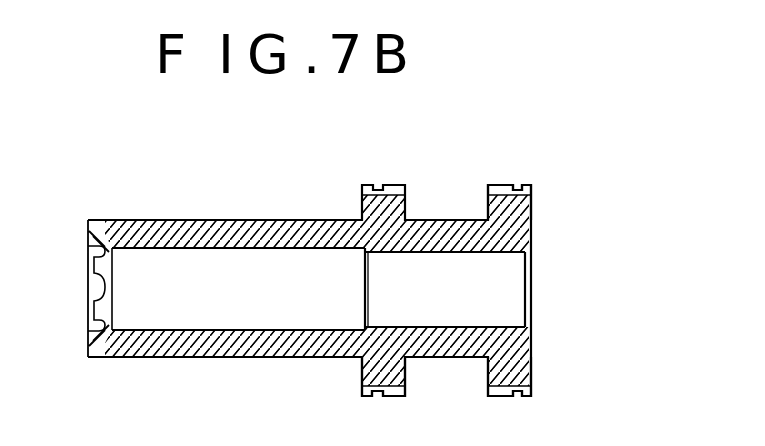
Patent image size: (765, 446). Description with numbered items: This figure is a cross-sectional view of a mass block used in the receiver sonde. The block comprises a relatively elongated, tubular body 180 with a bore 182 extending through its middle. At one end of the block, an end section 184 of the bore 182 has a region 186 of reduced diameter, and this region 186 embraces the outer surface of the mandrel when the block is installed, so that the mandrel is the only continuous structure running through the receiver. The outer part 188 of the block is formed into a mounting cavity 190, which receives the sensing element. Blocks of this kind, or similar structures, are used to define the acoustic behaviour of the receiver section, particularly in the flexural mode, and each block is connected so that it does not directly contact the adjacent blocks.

The tubular body 180 is at (292, 228).
The bore 182 is at (192, 250).
The end section 184 is at (531, 228).
The region of reduced diameter 186 is at (492, 252).
The outer part 188 is at (362, 362).
The mounting cavity 190 is at (488, 370).